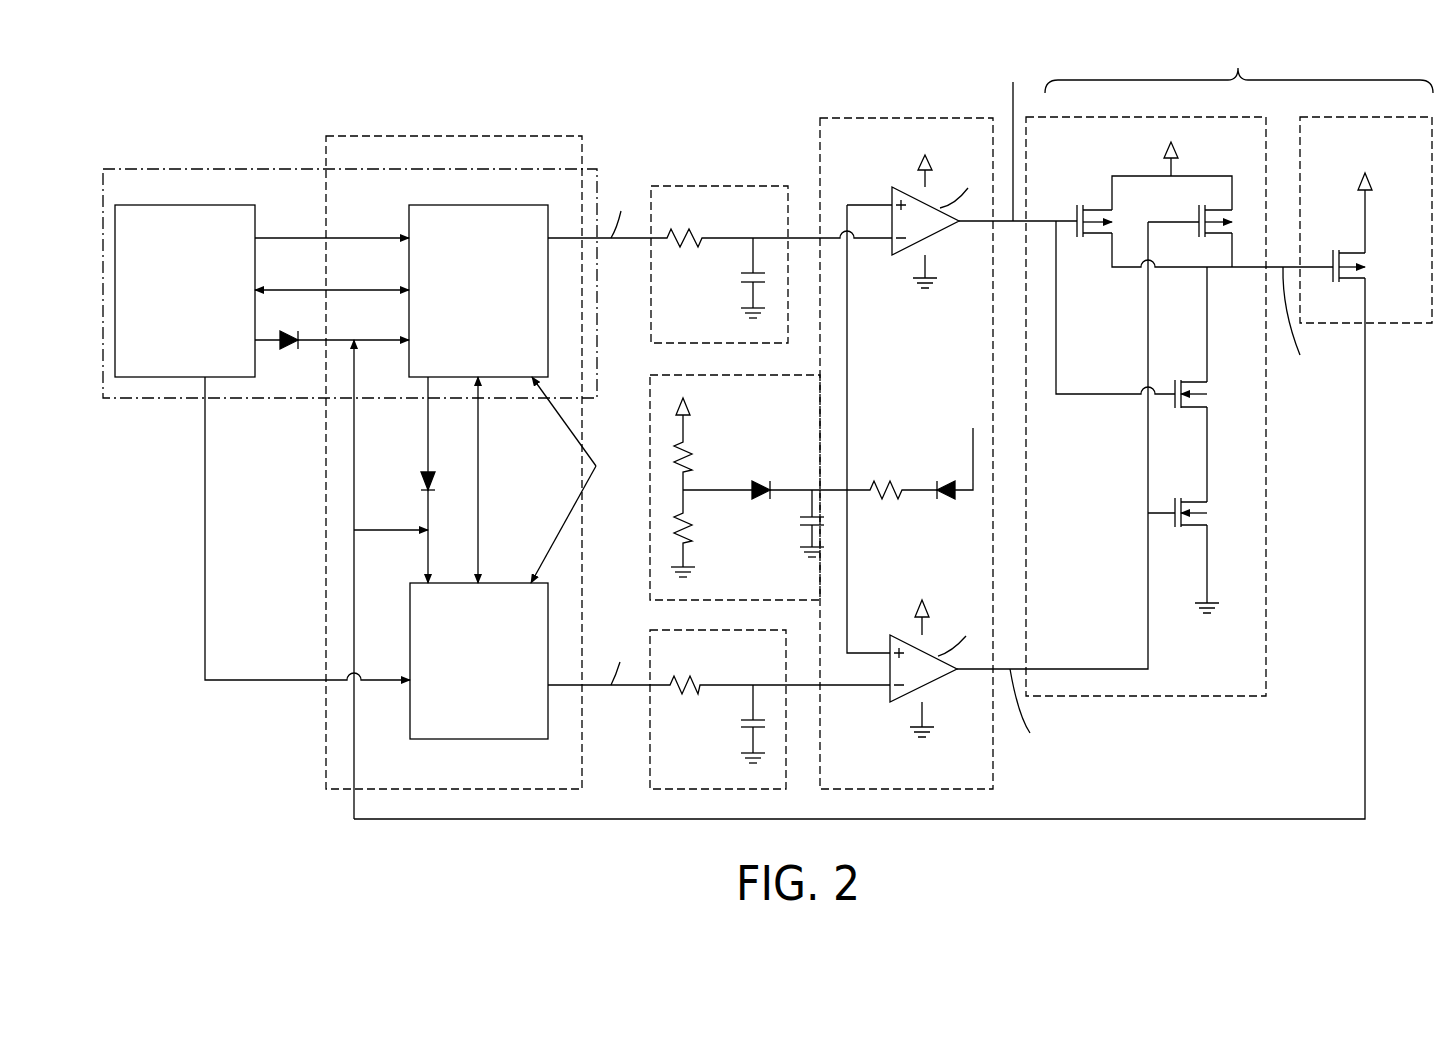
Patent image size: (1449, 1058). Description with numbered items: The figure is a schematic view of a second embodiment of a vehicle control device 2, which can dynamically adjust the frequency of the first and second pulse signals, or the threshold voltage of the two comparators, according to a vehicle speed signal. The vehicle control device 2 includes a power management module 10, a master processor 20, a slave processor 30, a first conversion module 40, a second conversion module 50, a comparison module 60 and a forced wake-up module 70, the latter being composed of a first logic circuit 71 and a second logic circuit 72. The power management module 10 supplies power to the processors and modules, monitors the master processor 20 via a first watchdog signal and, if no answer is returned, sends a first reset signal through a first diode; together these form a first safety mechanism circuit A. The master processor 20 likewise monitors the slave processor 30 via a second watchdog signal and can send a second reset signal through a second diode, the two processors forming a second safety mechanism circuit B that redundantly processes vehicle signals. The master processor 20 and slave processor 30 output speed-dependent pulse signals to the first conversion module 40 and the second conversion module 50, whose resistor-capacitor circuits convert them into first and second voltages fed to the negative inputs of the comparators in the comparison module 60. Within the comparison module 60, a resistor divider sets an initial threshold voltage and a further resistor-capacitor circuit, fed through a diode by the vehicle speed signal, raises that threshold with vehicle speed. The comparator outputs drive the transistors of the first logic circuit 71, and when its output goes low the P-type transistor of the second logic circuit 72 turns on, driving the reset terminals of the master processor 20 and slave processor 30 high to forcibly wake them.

The vehicle control device 2 is at (686, 94).
The first safety mechanism circuit A is at (205, 168).
The second safety mechanism circuit B is at (430, 135).
The power management module 10 is at (205, 203).
The master processor 20 is at (457, 203).
The slave processor 30 is at (445, 739).
The first conversion module 40 is at (697, 186).
The second conversion module 50 is at (705, 630).
The comparison module 60 is at (883, 118).
The forced wake-up module 70 is at (1229, 368).
The first logic circuit 71 is at (1133, 117).
The second logic circuit 72 is at (1370, 117).